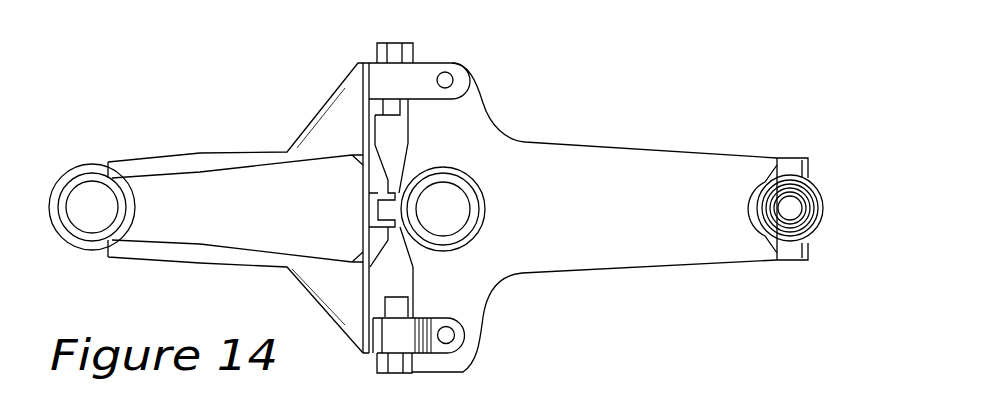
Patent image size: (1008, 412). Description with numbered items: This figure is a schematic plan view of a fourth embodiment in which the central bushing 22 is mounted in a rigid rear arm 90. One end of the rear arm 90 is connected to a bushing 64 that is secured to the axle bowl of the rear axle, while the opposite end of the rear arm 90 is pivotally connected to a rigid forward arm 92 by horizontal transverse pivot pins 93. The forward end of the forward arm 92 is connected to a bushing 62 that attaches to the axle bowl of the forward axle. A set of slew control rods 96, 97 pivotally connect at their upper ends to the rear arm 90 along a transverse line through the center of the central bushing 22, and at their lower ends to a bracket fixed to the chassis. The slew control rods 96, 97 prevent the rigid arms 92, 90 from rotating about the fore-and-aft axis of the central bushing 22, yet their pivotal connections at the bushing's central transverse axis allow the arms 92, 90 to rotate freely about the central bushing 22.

The central bushing 22 is at (485, 212).
The bushing 62 is at (75, 165).
The bushing 64 is at (813, 210).
The rigid rear arm 90 is at (669, 181).
The rigid forward arm 92 is at (253, 152).
The horizontal transverse pivot pins 93 is at (395, 43).
The slew control rod 96 is at (455, 335).
The slew control rod 97 is at (453, 82).